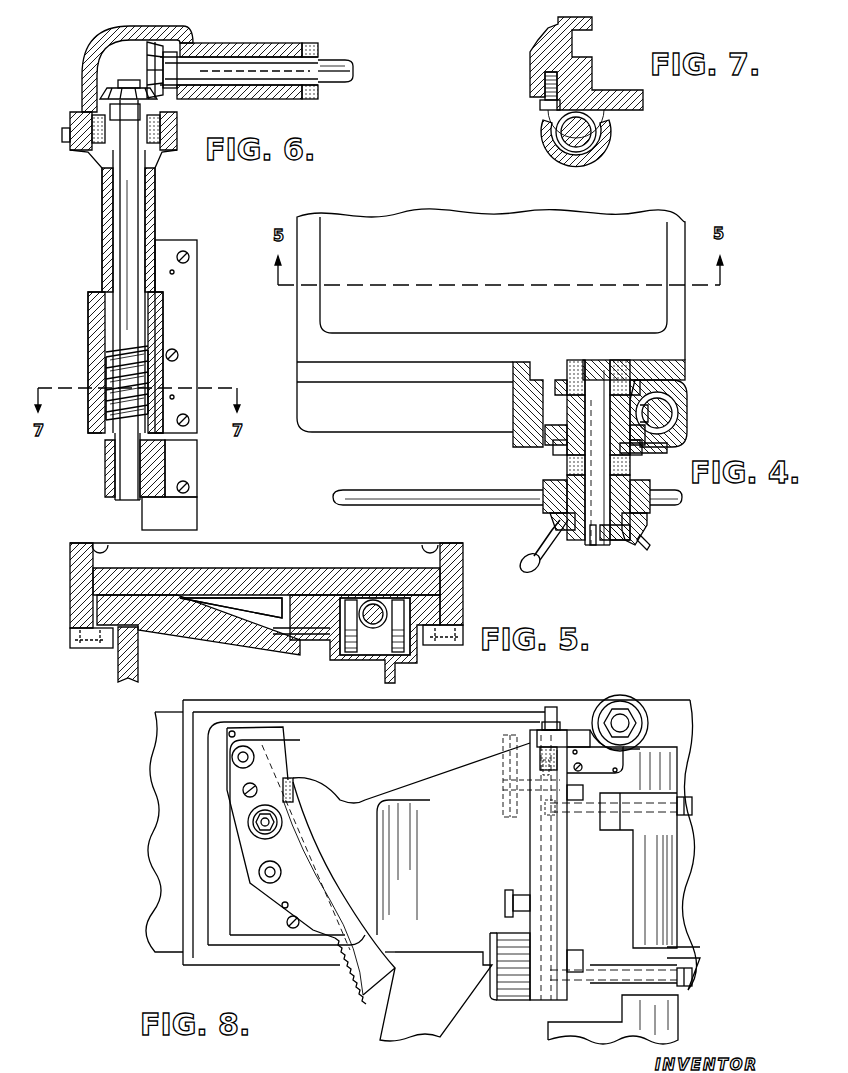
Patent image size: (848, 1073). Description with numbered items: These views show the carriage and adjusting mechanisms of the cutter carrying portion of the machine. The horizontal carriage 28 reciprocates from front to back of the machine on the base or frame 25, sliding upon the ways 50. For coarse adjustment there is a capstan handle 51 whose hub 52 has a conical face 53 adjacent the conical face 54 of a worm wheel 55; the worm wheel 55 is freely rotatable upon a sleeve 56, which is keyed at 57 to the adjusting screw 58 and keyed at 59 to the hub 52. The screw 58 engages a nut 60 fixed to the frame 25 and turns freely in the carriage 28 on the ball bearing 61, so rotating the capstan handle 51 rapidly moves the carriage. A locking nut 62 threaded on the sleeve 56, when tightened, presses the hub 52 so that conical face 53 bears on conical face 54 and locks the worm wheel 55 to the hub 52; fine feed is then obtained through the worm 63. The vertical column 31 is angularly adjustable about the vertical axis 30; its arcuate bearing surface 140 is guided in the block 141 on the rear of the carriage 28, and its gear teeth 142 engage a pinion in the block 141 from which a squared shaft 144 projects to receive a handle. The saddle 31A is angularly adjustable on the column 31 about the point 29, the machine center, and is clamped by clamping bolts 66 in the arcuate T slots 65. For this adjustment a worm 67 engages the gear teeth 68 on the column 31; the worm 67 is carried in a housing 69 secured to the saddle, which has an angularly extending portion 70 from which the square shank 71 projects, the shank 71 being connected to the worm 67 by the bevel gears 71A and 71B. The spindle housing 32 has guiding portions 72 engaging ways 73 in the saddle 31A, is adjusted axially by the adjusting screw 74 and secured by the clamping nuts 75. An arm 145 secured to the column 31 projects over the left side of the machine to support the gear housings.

In FIG. 5, the base or frame 25 is at (128, 660).
In FIG. 4, the horizontal carriage 28 is at (653, 317).
In FIG. 5, the horizontal carriage 28 is at (90, 578).
In FIG. 8, the horizontal carriage 28 is at (690, 876).
In FIG. 8, the point 29 is at (318, 800).
In FIG. 8, the vertical axis 30 is at (621, 723).
In FIG. 7, the vertical column 31 is at (540, 62).
In FIG. 8, the vertical column 31 is at (470, 751).
In FIG. 8, the saddle 31A is at (553, 840).
In FIG. 8, the spindle housing 32 is at (642, 845).
In FIG. 5, the ways 50 is at (172, 601).
In FIG. 4, the capstan handle 51 is at (375, 497).
In FIG. 5, the capstan handle 51 is at (301, 631).
In FIG. 4, the hub 52 is at (566, 465).
In FIG. 4, the conical face 53 is at (680, 437).
In FIG. 4, the conical face 54 is at (652, 415).
In FIG. 4, the worm wheel 55 is at (635, 397).
In FIG. 4, the sleeve 56 is at (602, 378).
In FIG. 4, the key 57 is at (612, 482).
In FIG. 4, the adjusting screw 58 is at (630, 520).
In FIG. 5, the adjusting screw 58 is at (370, 597).
In FIG. 4, the key 59 is at (540, 474).
In FIG. 5, the nut 60 is at (383, 599).
In FIG. 4, the ball bearing 61 is at (619, 360).
In FIG. 4, the locking nut 62 is at (626, 540).
In FIG. 4, the worm 63 is at (672, 412).
In FIG. 7, the arcuate T slots 65 is at (560, 55).
In FIG. 8, the arcuate T slots 65 is at (505, 806).
In FIG. 8, the clamping bolts 66 is at (576, 795).
In FIG. 6, the worm 67 is at (120, 353).
In FIG. 7, the worm 67 is at (578, 128).
In FIG. 8, the gear teeth 68 is at (500, 988).
In FIG. 6, the housing 69 is at (153, 211).
In FIG. 7, the housing 69 is at (543, 135).
In FIG. 6, the angularly extending portion 70 is at (277, 89).
In FIG. 6, the square shank 71 is at (333, 67).
In FIG. 6, the bevel gear 71A is at (148, 67).
In FIG. 6, the bevel gear 71B is at (110, 92).
In FIG. 8, the guiding portions 72 is at (545, 822).
In FIG. 8, the ways 73 is at (553, 839).
In FIG. 8, the adjusting screw 74 is at (548, 712).
In FIG. 8, the clamping nuts 75 is at (692, 808).
In FIG. 8, the arcuate bearing surface 140 is at (333, 962).
In FIG. 8, the block 141 is at (272, 762).
In FIG. 8, the gear teeth 142 is at (352, 965).
In FIG. 8, the squared shaft 144 is at (265, 822).
In FIG. 8, the arm 145 is at (398, 1013).